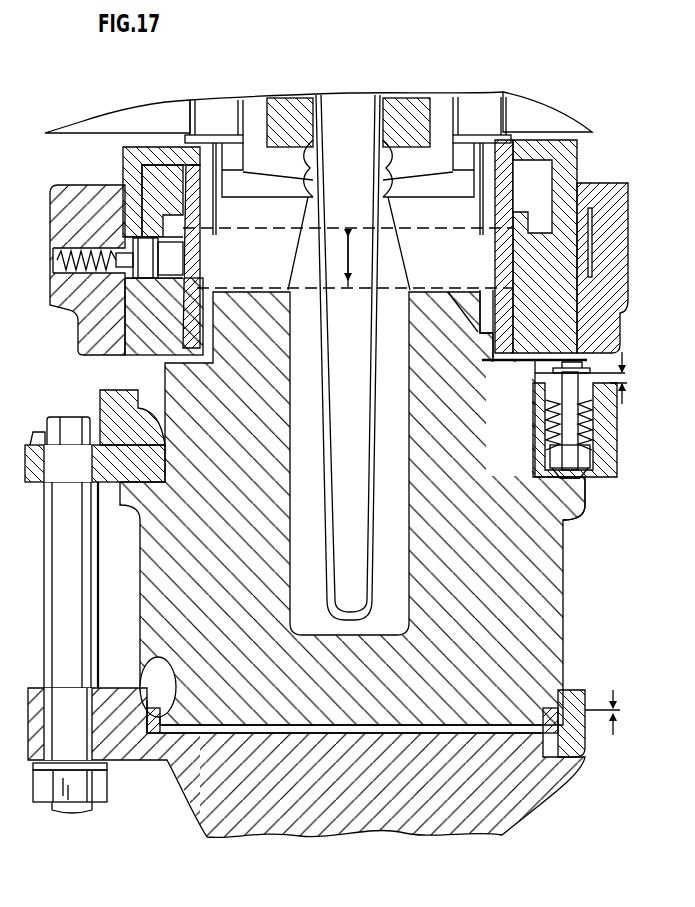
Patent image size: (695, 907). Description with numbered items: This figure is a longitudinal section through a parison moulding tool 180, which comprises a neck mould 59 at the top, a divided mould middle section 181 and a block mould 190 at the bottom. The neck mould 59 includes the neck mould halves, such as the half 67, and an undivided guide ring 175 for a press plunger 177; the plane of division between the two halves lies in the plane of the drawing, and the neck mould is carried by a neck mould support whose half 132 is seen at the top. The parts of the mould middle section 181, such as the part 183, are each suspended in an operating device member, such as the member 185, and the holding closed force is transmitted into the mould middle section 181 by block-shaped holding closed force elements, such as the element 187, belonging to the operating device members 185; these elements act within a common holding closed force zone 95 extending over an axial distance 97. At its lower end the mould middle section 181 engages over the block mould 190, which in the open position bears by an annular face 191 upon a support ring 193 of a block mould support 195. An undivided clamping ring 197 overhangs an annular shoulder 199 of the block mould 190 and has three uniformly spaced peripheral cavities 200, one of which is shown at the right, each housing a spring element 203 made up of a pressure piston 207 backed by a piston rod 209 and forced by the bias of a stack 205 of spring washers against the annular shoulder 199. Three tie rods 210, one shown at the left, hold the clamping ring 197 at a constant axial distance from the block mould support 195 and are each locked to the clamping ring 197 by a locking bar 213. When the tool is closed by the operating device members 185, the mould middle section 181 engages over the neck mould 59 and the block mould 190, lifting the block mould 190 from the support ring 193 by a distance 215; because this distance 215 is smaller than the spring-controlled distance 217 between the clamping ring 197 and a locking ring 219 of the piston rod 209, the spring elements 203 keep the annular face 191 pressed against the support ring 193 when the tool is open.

The neck mould 59 is at (440, 88).
The neck mould half 67 is at (468, 100).
The holding closed force zone 95 is at (448, 247).
The axial distance 97 is at (336, 258).
The neck mould support half 132 is at (78, 124).
The guide ring 175 is at (283, 105).
The press plunger 177 is at (355, 108).
The moulding tool 180 is at (250, 80).
The mould middle section 181 is at (185, 136).
The mould middle section part 183 is at (214, 157).
The operating device member 185 is at (120, 157).
The holding closed force element 187 is at (184, 272).
The block mould 190 is at (563, 615).
The annular face 191 is at (150, 666).
The support ring 193 is at (564, 754).
The block mould support 195 is at (418, 838).
The clamping ring 197 is at (540, 398).
The annular shoulder 199 is at (580, 508).
The peripheral cavity 200 is at (552, 430).
The spring element 203 is at (560, 455).
The stack of spring washers 205 is at (560, 476).
The pressure piston 207 is at (570, 474).
The piston rod 209 is at (565, 410).
The tie rod 210 is at (104, 573).
The locking bar 213 is at (55, 440).
The distance 215 is at (618, 715).
The distance 217 is at (640, 378).
The locking ring 219 is at (553, 372).